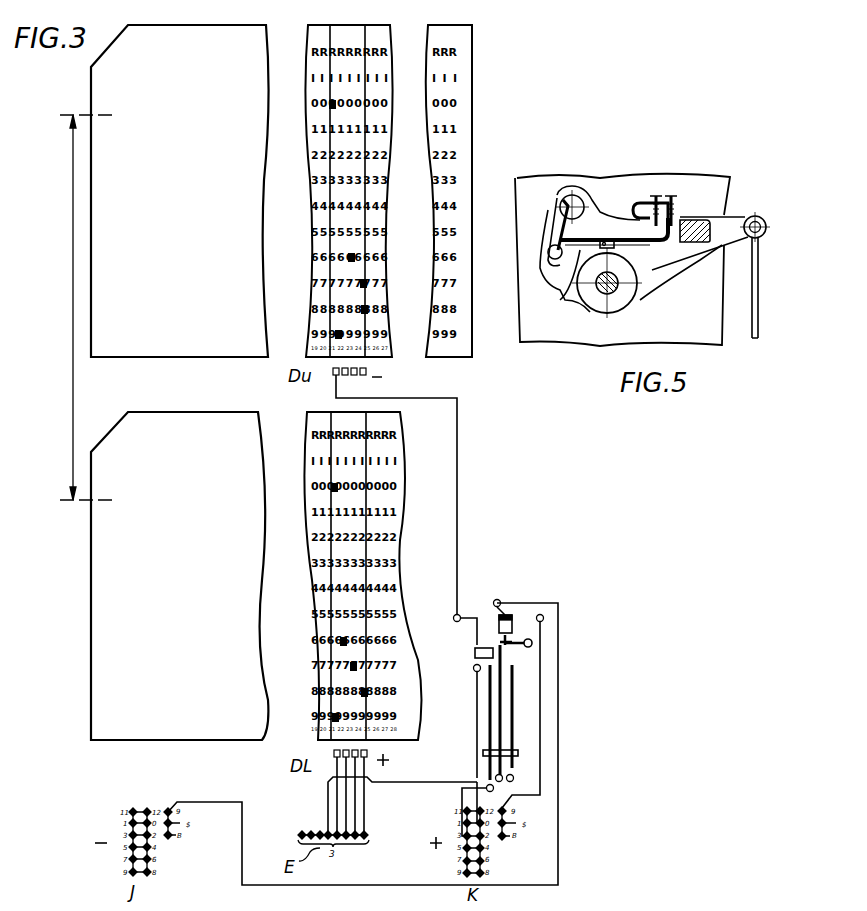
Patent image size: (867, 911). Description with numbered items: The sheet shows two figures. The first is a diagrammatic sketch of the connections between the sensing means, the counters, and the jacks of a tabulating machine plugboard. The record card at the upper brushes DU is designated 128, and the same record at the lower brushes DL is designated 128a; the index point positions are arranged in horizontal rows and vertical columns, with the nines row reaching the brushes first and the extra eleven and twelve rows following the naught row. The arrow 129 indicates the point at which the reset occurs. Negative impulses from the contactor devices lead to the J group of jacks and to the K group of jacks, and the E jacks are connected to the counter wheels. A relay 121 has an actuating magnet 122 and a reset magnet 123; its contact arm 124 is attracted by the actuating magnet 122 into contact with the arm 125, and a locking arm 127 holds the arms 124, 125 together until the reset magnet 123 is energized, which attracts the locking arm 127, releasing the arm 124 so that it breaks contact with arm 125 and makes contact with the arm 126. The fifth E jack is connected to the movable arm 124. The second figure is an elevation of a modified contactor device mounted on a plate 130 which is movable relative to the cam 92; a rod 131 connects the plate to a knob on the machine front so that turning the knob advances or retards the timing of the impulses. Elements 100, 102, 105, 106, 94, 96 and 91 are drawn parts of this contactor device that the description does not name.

In FIG. 3, the record at the upper brushes 128 is at (165, 358).
In FIG. 3, the record at the lower brushes 128a is at (165, 741).
In FIG. 3, the arrow indicating reset point 129 is at (73, 350).
In FIG. 3, the relay 121 is at (527, 730).
In FIG. 3, the actuating magnet 122 is at (476, 652).
In FIG. 3, the reset magnet 123 is at (512, 612).
In FIG. 3, the contact arm 124 is at (505, 705).
In FIG. 3, the arm 125 is at (489, 725).
In FIG. 3, the arm 126 is at (515, 680).
In FIG. 3, the locking arm 127 is at (527, 646).
In FIG. 5, the pivot stud 100 is at (580, 205).
In FIG. 5, the spring strip 102 is at (614, 224).
In FIG. 5, the adjusting screws 105 is at (690, 220).
In FIG. 5, the plate 130 is at (735, 220).
In FIG. 5, the rod 131 is at (752, 332).
In FIG. 5, the stop block 106 is at (698, 243).
In FIG. 5, the clip 94 is at (636, 247).
In FIG. 5, the pawl 96 is at (556, 255).
In FIG. 5, the shaft 91 is at (598, 290).
In FIG. 5, the cam 92 is at (630, 290).